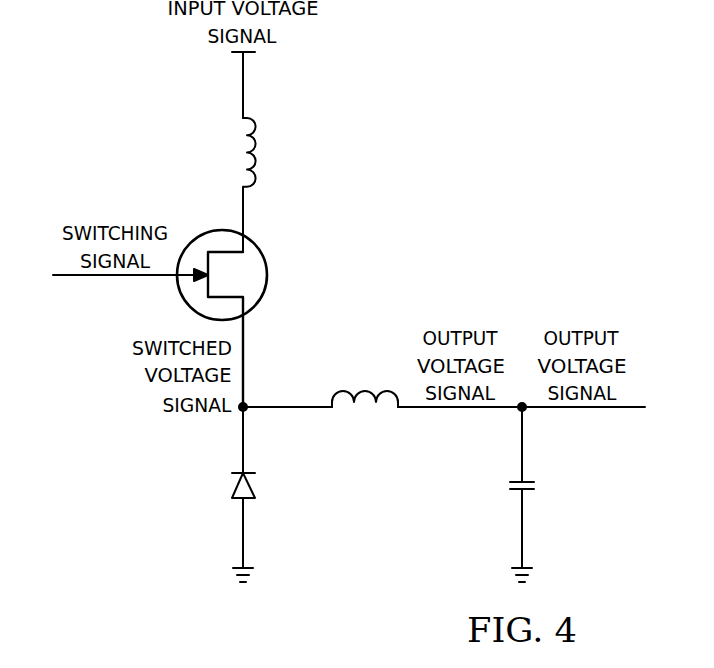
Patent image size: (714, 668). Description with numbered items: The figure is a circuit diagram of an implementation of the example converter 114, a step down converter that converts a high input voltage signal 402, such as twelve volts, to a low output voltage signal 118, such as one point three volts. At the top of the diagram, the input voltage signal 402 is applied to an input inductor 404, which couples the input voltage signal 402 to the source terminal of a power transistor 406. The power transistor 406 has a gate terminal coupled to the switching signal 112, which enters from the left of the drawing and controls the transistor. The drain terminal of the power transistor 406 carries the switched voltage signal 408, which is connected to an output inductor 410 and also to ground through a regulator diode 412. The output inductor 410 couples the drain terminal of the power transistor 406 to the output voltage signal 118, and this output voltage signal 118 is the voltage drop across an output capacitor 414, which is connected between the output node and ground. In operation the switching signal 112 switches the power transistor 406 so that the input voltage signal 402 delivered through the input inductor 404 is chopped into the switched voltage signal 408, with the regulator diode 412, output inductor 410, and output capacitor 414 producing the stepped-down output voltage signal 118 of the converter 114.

The input voltage signal 402 is at (244, 88).
The input inductor 404 is at (260, 144).
The power transistor 406 is at (267, 276).
The switched voltage signal 408 is at (245, 375).
The output inductor 410 is at (358, 387).
The regulator diode 412 is at (232, 483).
The output capacitor 414 is at (535, 487).
The switching signal 112 is at (110, 278).
The converter 114 is at (555, 108).
The output voltage signal 118 is at (455, 410).